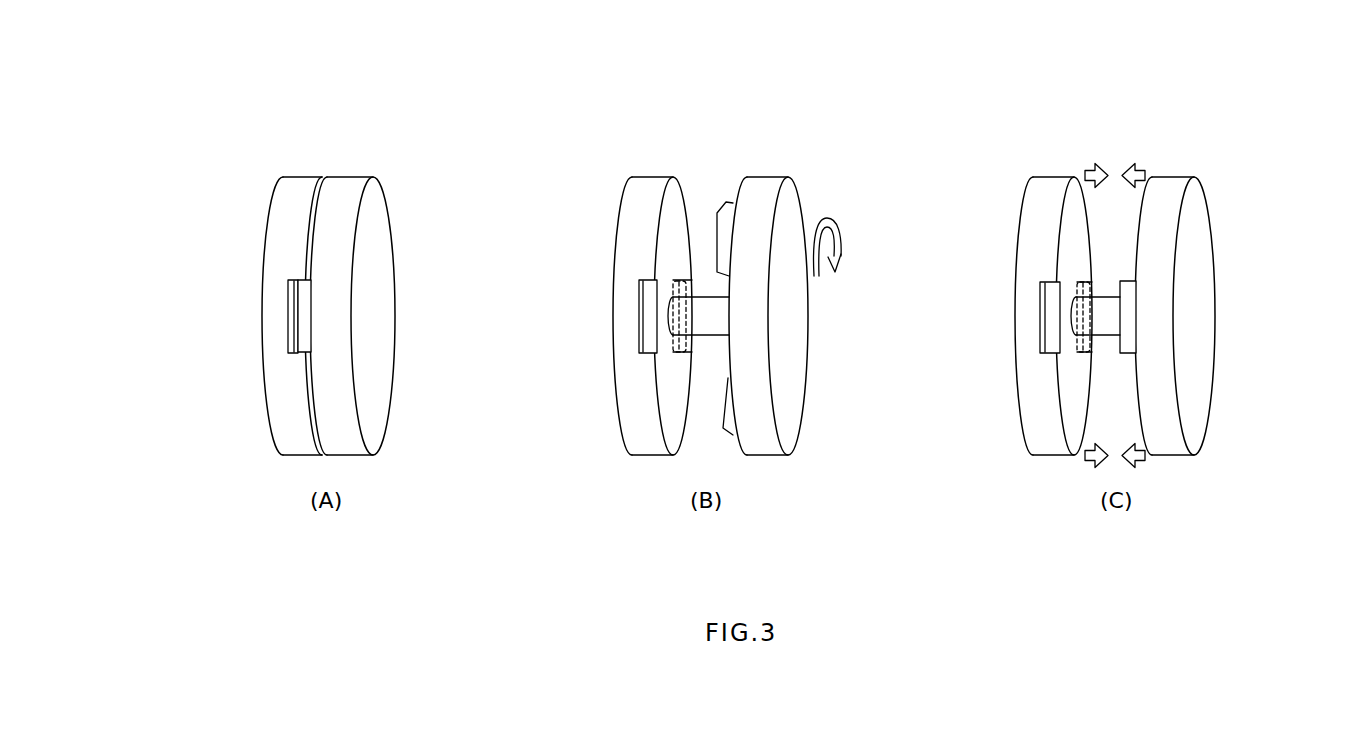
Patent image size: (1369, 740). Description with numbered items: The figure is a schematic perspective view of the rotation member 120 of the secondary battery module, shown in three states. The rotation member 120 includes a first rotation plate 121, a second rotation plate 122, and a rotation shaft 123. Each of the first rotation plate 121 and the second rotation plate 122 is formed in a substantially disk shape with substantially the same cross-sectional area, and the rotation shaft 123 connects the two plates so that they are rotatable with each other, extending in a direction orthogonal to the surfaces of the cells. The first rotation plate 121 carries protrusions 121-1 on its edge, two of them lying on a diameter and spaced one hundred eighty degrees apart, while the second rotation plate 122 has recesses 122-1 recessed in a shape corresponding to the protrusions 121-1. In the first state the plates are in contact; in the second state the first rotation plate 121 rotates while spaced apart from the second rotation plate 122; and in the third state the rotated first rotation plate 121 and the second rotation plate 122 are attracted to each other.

The rotation member 120 is at (740, 74).
The first rotation plate 121 is at (404, 204).
The protrusion 121-1 is at (311, 314).
The second rotation plate 122 is at (245, 212).
The recess 122-1 is at (290, 313).
The rotation shaft 123 is at (672, 317).